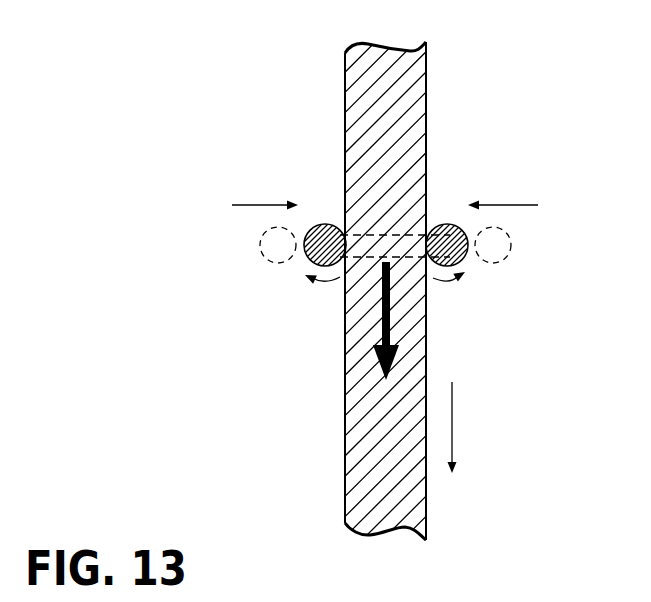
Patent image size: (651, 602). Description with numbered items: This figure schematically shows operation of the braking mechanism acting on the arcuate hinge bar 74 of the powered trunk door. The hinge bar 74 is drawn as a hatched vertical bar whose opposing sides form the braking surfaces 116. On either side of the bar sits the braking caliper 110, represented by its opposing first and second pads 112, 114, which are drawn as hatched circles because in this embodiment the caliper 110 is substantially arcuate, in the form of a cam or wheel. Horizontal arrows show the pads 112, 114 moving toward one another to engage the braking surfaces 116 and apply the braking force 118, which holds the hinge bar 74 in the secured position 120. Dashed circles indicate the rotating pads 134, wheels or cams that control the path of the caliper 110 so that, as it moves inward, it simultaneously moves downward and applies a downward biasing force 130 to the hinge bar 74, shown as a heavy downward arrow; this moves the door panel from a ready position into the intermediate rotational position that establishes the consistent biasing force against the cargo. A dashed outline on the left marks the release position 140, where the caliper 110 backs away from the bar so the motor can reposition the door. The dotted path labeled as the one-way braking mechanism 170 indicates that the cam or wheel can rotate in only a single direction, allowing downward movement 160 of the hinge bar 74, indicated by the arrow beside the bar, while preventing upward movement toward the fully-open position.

The arcuate hinge bar 74 is at (403, 68).
The braking surfaces 116 is at (426, 100).
The first pad 112 is at (320, 224).
The second pad 114 is at (465, 252).
The braking force 118 is at (503, 205).
The secured position 120 is at (324, 142).
The release position 140 is at (252, 239).
The rotating pads 134 is at (493, 243).
The one-way braking mechanism 170 is at (472, 220).
The braking caliper 110 is at (274, 316).
The downward biasing force 130 is at (387, 317).
The downward movement 160 is at (452, 414).